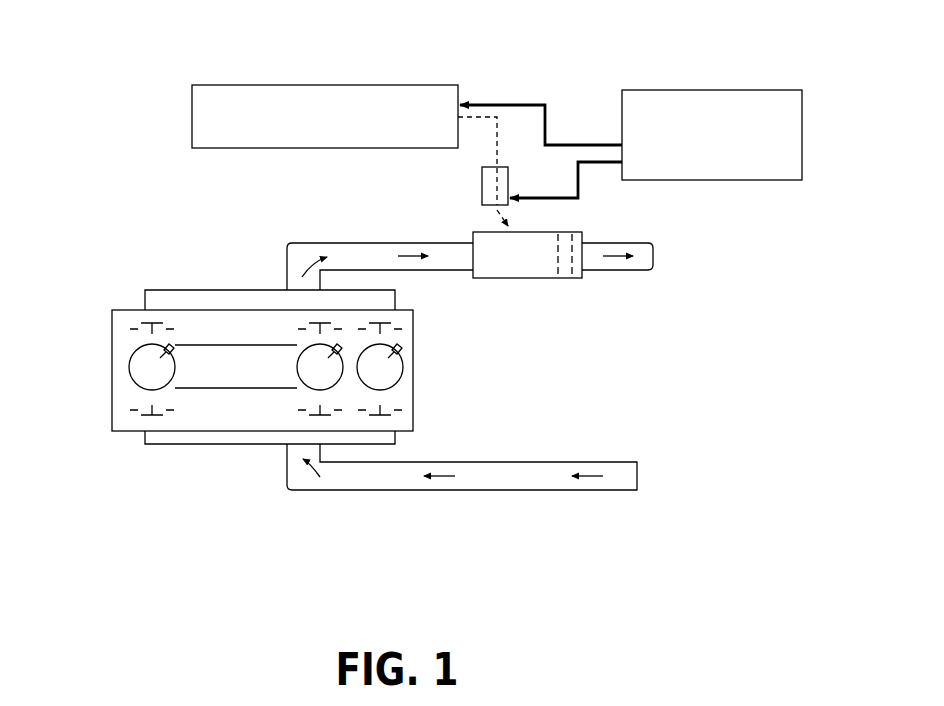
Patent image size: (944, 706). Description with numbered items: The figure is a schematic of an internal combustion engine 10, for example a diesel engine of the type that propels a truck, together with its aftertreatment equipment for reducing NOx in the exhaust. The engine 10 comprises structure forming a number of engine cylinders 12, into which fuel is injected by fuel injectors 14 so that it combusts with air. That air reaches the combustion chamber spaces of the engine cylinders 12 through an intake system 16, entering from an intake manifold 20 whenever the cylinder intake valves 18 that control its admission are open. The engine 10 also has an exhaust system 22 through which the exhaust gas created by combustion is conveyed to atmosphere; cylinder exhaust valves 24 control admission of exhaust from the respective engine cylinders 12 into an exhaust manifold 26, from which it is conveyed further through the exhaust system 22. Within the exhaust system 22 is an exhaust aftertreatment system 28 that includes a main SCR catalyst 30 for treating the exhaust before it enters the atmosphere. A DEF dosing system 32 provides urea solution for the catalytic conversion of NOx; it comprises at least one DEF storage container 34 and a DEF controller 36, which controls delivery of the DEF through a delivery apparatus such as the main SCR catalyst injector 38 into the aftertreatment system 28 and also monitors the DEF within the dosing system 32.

The internal combustion engine 10 is at (111, 252).
The engine cylinders 12 is at (298, 372).
The fuel injectors 14 is at (333, 346).
The intake system 16 is at (385, 491).
The cylinder intake valves 18 is at (315, 420).
The intake manifold 20 is at (217, 445).
The exhaust system 22 is at (374, 243).
The cylinder exhaust valves 24 is at (303, 318).
The exhaust manifold 26 is at (265, 290).
The exhaust aftertreatment system 28 is at (499, 264).
The main SCR catalyst 30 is at (573, 279).
The DEF dosing system 32 is at (518, 86).
The DEF storage container 34 is at (297, 140).
The DEF controller 36 is at (720, 117).
The main SCR catalyst injector 38 is at (512, 181).